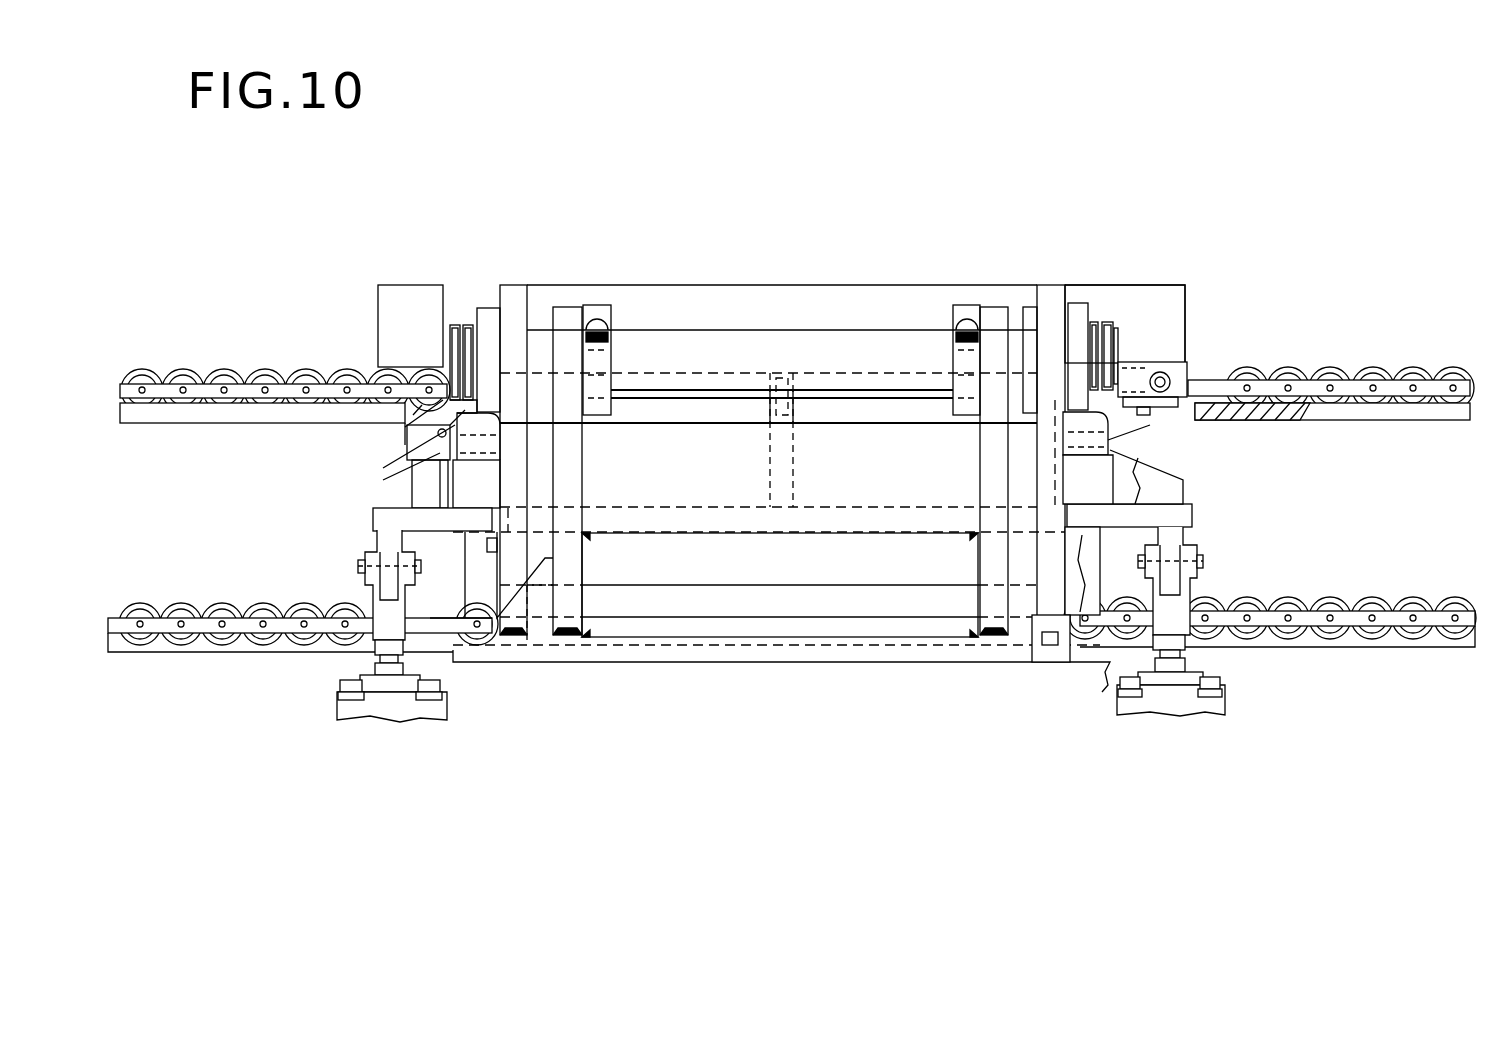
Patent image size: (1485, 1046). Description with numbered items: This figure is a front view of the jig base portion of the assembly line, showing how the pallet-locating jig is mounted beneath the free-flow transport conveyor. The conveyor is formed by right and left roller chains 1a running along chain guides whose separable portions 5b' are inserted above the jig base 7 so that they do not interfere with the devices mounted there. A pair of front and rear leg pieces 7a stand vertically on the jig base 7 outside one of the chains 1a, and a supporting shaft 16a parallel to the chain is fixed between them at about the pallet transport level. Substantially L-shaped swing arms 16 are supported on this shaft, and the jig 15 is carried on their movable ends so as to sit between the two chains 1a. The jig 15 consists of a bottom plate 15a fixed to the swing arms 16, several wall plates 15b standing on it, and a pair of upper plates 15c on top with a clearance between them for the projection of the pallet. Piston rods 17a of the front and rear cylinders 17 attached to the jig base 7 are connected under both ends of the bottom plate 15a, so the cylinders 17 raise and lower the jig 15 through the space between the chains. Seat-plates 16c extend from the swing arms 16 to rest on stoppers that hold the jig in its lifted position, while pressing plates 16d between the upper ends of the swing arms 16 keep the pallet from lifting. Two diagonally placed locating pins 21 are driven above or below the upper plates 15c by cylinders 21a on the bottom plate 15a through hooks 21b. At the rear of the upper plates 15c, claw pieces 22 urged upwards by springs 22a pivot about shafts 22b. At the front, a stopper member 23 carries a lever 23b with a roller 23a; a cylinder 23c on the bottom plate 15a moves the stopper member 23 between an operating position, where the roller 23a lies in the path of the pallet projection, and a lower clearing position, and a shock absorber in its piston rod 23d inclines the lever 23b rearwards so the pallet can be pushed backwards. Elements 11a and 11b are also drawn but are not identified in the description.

The roller chains 1a is at (228, 381).
The separable portions of chain guides 5b' is at (791, 542).
The jig base 7 is at (1082, 668).
The leg pieces 7a is at (568, 348).
The support block 11a is at (1094, 527).
The bracket block 11b is at (1112, 430).
The jig 15 is at (1200, 474).
The bottom plate 15a is at (1185, 516).
The wall plates 15b is at (790, 447).
The upper plates 15c is at (662, 400).
The swing arms 16 is at (512, 295).
The supporting shaft 16a is at (797, 330).
The seat-plates 16c is at (895, 648).
The pressing plates 16d is at (1160, 292).
The cylinders 17 is at (372, 705).
The piston rods 17a is at (380, 608).
The locating pins 21 is at (455, 420).
The cylinders 21a is at (490, 478).
The hooks 21b is at (415, 486).
The claw pieces 22 is at (1130, 365).
The springs 22a is at (1160, 372).
The shafts 22b is at (1212, 392).
The stopper member 23 is at (392, 427).
The roller 23a is at (455, 388).
The lever 23b is at (440, 405).
The cylinder 23c is at (462, 620).
The piston rod 23d is at (425, 505).